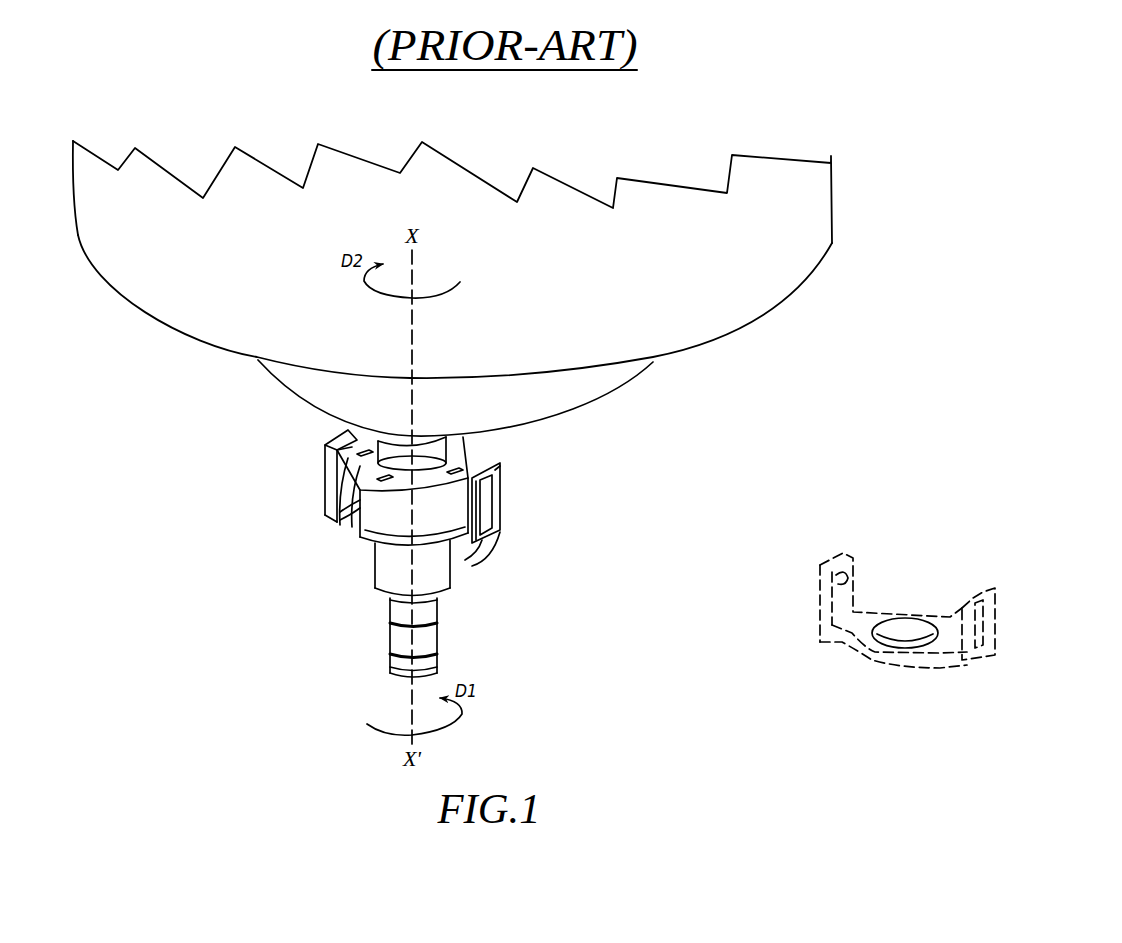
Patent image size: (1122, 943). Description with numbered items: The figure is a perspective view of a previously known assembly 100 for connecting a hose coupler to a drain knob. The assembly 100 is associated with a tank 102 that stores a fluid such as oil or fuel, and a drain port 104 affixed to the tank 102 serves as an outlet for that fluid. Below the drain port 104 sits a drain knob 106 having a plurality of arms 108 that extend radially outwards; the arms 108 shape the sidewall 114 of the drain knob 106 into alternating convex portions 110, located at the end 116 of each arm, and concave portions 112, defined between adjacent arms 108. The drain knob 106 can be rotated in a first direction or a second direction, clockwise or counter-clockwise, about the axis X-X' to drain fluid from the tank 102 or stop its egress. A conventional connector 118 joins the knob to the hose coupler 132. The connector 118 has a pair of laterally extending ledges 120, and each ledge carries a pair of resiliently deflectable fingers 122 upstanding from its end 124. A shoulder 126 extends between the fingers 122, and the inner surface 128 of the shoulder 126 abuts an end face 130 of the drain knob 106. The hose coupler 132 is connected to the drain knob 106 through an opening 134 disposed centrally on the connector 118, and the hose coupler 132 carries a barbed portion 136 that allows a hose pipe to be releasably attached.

The assembly 100 is at (569, 620).
The tank 102 is at (810, 174).
The drain port 104 is at (467, 433).
The drain knob 106 is at (451, 458).
The arms 108 is at (338, 532).
The convex portions 110 is at (397, 520).
The concave portions 112 is at (402, 588).
The sidewall 114 is at (443, 503).
The end 116 is at (362, 537).
The connector 118 is at (506, 506).
The ledges 120 is at (445, 532).
The fingers 122 is at (493, 493).
The end 124 is at (503, 464).
The shoulder 126 is at (332, 440).
The inner surface 128 is at (352, 457).
The end face 130 is at (352, 490).
The hose coupler 132 is at (395, 603).
The opening 134 is at (903, 637).
The barbed portion 136 is at (430, 636).